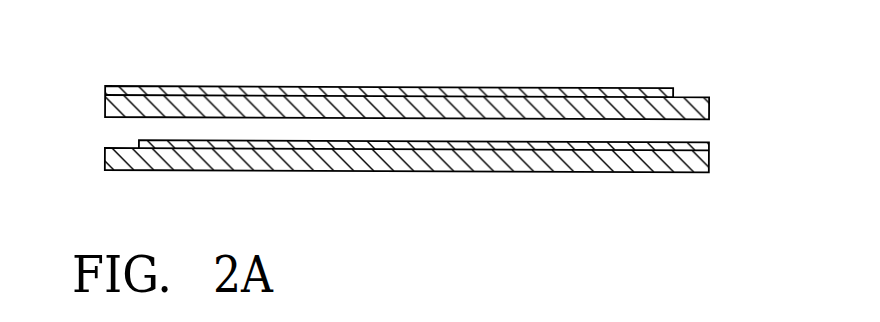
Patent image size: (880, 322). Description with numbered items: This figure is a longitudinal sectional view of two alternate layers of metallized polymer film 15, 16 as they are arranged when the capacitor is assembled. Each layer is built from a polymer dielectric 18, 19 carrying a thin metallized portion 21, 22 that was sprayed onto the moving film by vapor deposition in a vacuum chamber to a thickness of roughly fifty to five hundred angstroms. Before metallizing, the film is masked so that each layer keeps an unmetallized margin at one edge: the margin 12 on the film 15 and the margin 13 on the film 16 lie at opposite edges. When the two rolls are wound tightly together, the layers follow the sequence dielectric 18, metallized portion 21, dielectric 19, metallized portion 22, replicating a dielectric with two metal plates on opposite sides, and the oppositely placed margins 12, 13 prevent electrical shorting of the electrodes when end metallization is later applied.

The unmetallized margin 12 is at (426, 62).
The unmetallized margin 13 is at (368, 178).
The metallized film 15 is at (534, 98).
The metallized film 16 is at (607, 170).
The dielectric 18 is at (403, 97).
The dielectric 19 is at (411, 170).
The metallized portion 21 is at (275, 85).
The metallized portion 22 is at (257, 147).